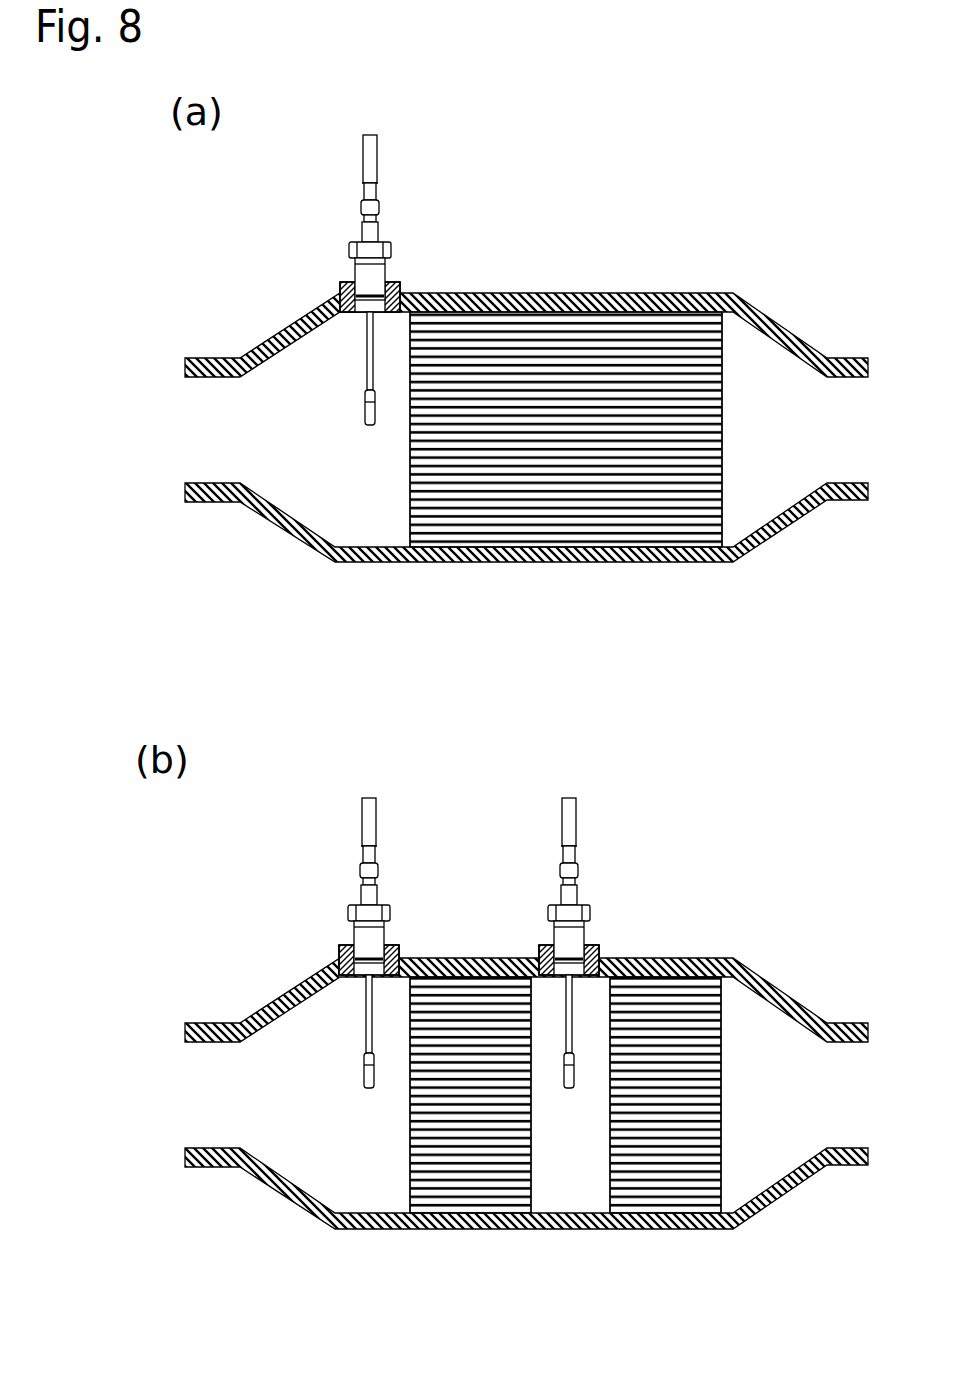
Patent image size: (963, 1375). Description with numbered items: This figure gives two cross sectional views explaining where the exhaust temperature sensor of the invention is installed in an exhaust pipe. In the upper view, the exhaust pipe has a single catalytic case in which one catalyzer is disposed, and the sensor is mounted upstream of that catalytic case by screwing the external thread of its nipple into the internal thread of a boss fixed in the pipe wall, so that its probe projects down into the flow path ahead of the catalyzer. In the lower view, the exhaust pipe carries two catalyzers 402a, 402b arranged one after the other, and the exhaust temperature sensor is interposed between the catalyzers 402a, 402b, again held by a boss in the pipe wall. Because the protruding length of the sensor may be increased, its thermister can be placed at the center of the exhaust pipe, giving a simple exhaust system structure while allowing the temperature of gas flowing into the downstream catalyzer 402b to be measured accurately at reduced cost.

The upstream catalyzer 402a is at (490, 1193).
The downstream catalyzer 402b is at (662, 1131).